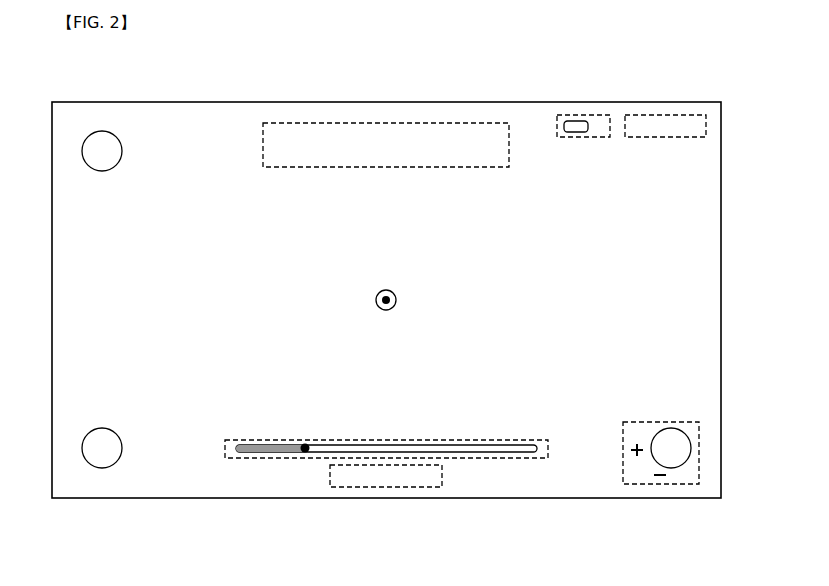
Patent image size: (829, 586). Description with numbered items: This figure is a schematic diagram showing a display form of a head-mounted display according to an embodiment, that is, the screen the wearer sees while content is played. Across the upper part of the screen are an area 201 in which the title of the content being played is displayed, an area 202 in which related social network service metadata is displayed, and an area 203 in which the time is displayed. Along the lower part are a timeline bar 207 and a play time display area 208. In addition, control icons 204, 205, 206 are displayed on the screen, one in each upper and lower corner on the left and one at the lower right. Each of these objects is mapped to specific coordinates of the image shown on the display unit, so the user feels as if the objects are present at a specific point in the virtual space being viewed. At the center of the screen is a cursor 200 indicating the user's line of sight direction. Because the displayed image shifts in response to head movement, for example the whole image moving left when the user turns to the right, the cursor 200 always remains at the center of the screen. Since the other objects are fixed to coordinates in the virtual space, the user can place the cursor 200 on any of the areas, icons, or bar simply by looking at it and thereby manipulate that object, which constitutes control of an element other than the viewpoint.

The cursor 200 is at (376, 298).
The area in which a title of content being played is displayed 201 is at (385, 123).
The area in which related social network service metadata is displayed 202 is at (583, 114).
The area in which the time is displayed 203 is at (665, 114).
The control icon 204 is at (102, 131).
The control icon 205 is at (102, 468).
The control icon 206 is at (662, 485).
The timeline bar 207 is at (498, 459).
The play time display area 208 is at (385, 488).